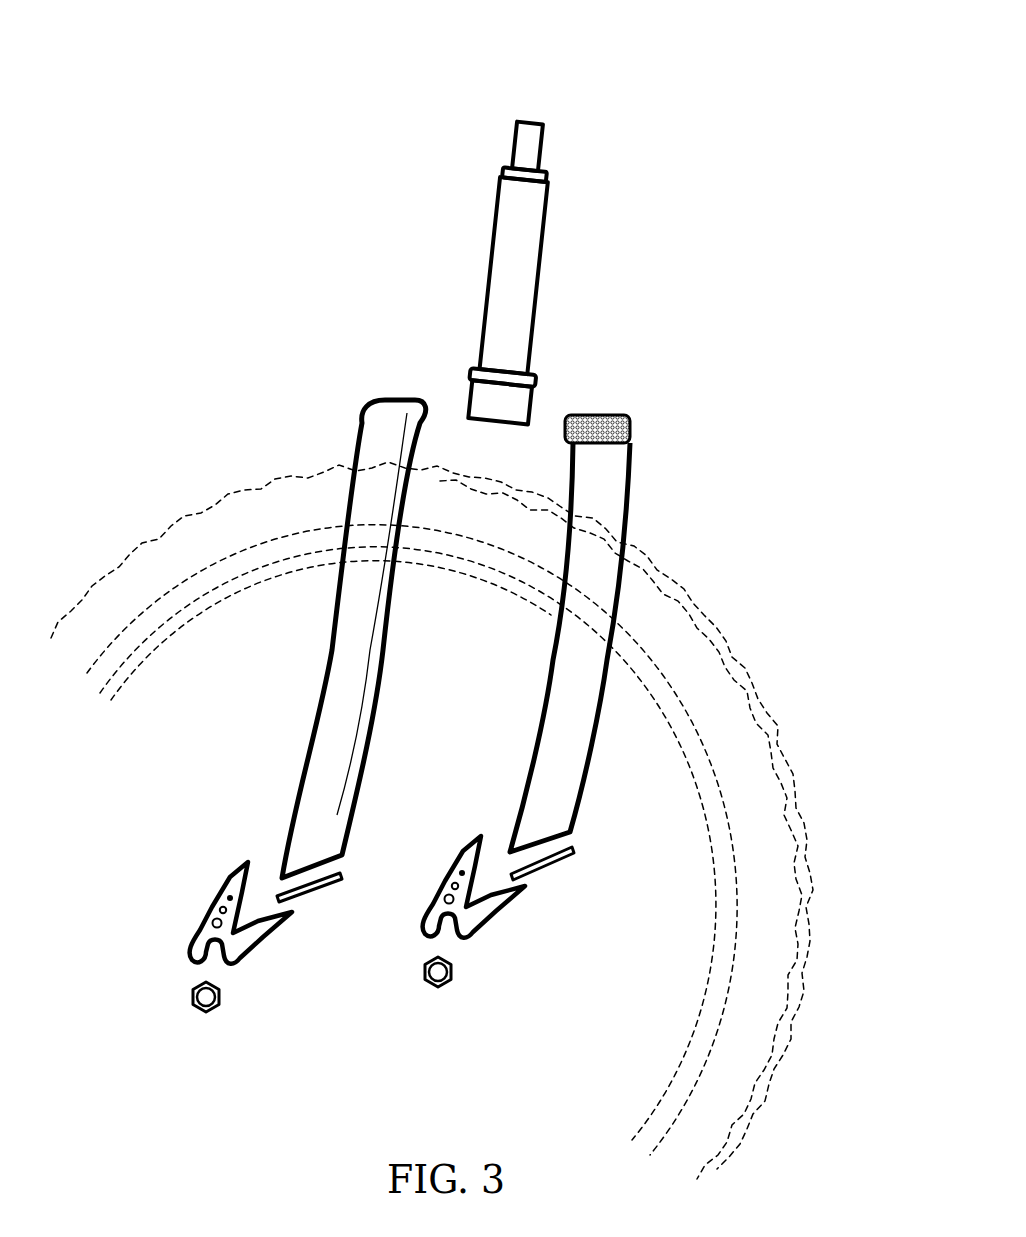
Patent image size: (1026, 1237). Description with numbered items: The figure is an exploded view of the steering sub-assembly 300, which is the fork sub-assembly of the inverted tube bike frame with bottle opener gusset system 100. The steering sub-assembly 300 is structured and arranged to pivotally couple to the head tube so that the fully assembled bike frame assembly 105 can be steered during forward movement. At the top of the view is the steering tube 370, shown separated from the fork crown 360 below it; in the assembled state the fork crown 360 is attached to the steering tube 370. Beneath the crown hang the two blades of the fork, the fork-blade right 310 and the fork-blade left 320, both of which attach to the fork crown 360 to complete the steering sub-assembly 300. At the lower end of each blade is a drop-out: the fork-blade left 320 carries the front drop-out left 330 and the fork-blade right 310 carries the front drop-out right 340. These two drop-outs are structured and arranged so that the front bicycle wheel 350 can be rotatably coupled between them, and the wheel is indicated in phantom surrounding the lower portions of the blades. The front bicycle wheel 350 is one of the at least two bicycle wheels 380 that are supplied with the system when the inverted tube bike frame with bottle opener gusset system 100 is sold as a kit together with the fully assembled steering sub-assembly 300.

The inverted tube bike frame with bottle opener gusset system 100 is at (658, 60).
The fully assembled bike frame assembly 105 is at (686, 98).
The steering sub-assembly 300 is at (715, 142).
The fork-blade right 310 is at (627, 517).
The fork-blade left 320 is at (323, 687).
The front drop-out left 330 is at (224, 878).
The front drop-out right 340 is at (483, 923).
The front bicycle wheel 350 is at (728, 637).
The fork crown 360 is at (505, 403).
The steering tube 370 is at (527, 260).
The bicycle wheels 380 is at (763, 707).